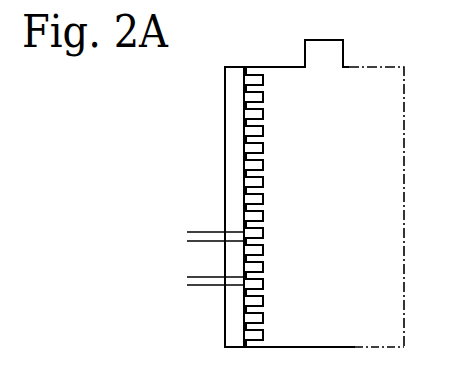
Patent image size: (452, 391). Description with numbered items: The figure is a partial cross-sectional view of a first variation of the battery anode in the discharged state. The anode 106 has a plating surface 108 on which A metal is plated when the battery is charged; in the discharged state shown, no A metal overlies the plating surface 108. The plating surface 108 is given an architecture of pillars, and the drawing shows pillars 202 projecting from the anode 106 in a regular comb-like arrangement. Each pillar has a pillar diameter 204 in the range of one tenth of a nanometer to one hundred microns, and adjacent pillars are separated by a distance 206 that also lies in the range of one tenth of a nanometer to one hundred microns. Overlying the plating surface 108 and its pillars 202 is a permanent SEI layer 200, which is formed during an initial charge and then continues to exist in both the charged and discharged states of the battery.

The anode 106 is at (374, 40).
The plating surface 108 is at (243, 57).
The permanent solid electrolyte interphase layer 200 is at (231, 324).
The pillars 202 is at (264, 96).
The pillar diameter 204 is at (199, 256).
The distance between pillars 206 is at (199, 262).